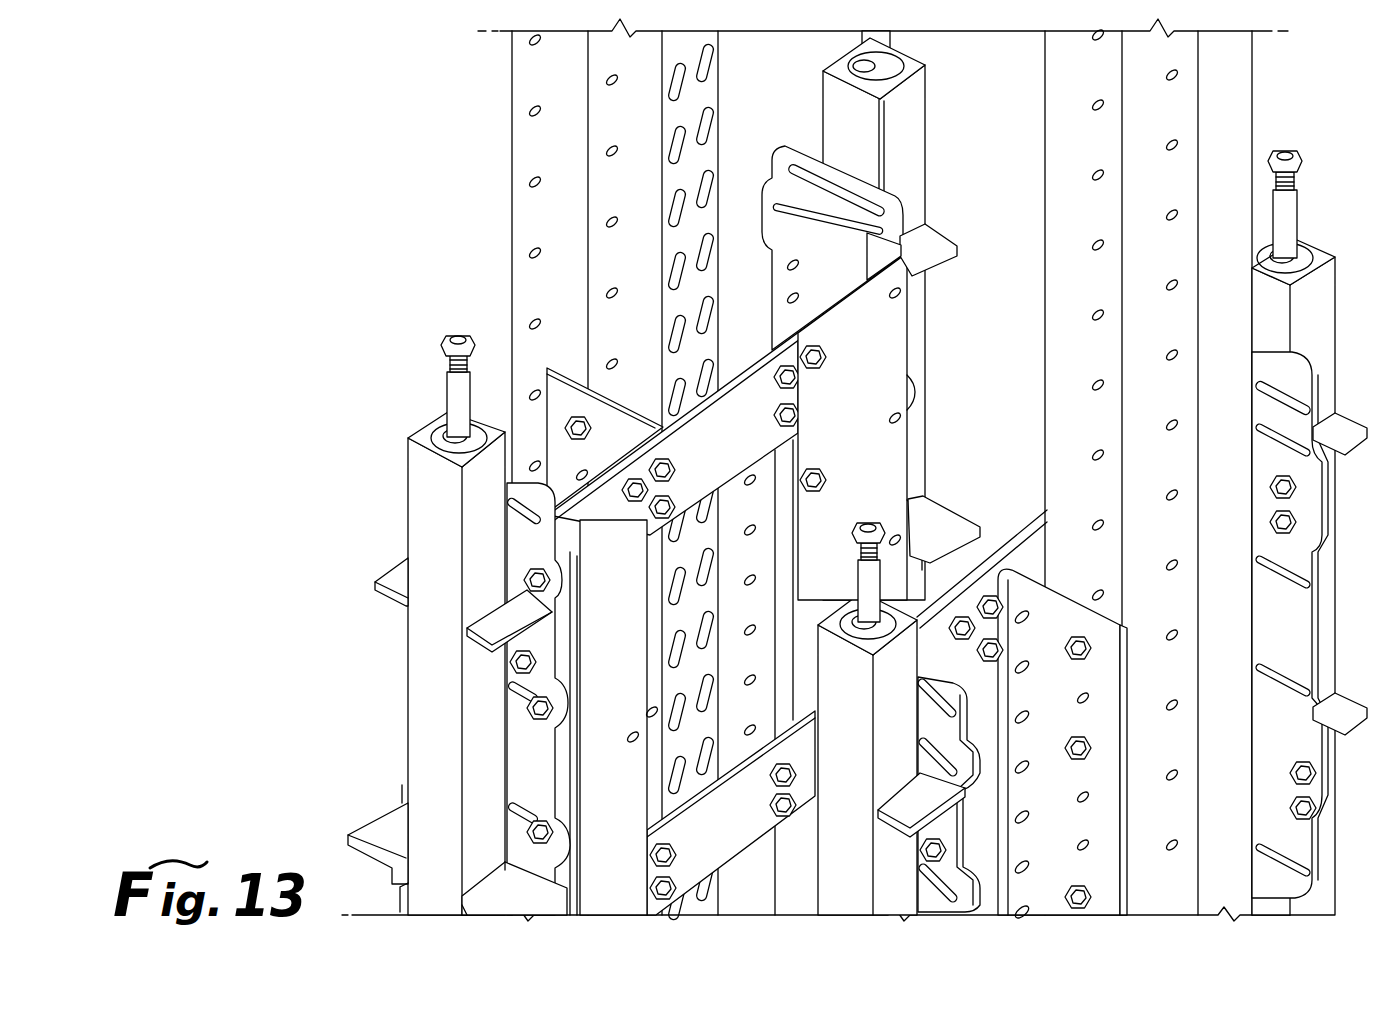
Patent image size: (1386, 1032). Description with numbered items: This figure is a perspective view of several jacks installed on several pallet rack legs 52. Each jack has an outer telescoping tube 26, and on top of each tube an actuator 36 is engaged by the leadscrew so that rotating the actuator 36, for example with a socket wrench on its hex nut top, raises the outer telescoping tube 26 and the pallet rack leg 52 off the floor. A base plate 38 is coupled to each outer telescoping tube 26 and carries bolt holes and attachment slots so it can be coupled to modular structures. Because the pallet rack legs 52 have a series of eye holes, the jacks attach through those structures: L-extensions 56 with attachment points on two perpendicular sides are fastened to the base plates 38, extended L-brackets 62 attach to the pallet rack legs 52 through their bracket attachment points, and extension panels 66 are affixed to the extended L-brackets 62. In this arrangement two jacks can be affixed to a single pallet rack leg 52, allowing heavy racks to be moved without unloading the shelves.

The outer telescoping tube 26 is at (836, 137).
The actuator 36 is at (440, 392).
The base plate 38 is at (813, 282).
The pallet rack leg 52 is at (618, 264).
The L-extension 56 is at (836, 427).
The extended L-bracket 62 is at (725, 610).
The extension panel 66 is at (703, 452).